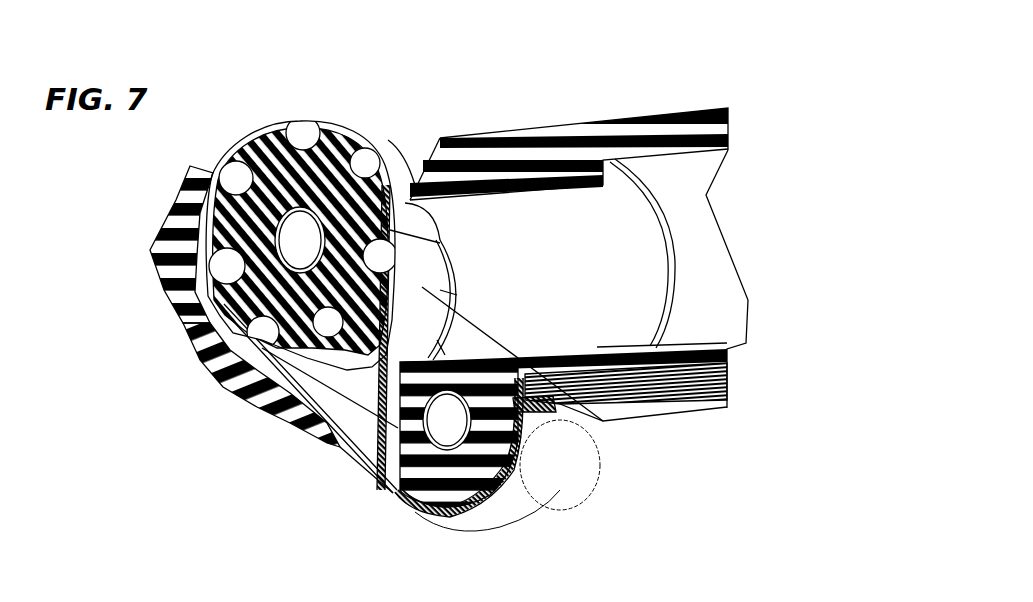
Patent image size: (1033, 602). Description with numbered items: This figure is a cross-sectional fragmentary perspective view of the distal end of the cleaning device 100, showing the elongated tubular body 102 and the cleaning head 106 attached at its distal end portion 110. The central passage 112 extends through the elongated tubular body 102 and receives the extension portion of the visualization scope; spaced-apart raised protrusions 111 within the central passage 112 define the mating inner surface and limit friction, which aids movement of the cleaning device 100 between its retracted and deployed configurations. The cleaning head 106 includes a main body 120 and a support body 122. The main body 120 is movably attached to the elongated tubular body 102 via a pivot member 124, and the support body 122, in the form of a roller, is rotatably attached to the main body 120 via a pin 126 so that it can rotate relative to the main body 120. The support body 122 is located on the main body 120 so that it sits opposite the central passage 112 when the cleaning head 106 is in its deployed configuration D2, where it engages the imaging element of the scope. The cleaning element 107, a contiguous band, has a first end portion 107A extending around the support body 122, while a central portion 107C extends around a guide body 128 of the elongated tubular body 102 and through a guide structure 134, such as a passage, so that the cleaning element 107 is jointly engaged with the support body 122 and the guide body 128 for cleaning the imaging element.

The cleaning device 100 is at (770, 118).
The elongated tubular body 102 is at (697, 108).
The cleaning head 106 is at (165, 228).
The cleaning element 107 is at (603, 421).
The first end portion 107A is at (300, 123).
The central portion 107C is at (513, 453).
The distal end portion 110 is at (460, 136).
The raised protrusions 111 is at (625, 310).
The central passage 112 is at (627, 237).
The main body 120 is at (215, 375).
The support body 122 is at (337, 168).
The pivot member 124 is at (448, 420).
The pin 126 is at (297, 240).
The guide body 128 is at (437, 470).
The guide structure 134 is at (668, 385).
The deployed configuration D2 is at (143, 302).